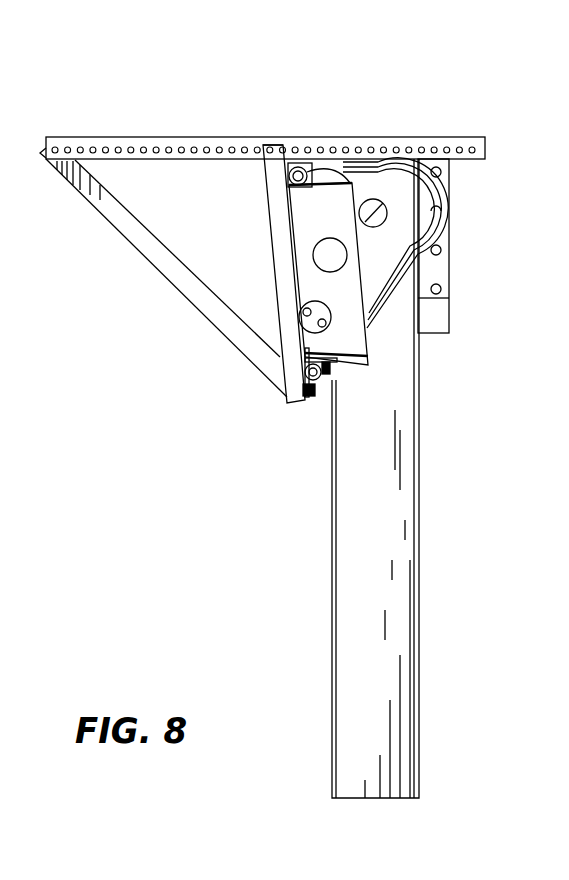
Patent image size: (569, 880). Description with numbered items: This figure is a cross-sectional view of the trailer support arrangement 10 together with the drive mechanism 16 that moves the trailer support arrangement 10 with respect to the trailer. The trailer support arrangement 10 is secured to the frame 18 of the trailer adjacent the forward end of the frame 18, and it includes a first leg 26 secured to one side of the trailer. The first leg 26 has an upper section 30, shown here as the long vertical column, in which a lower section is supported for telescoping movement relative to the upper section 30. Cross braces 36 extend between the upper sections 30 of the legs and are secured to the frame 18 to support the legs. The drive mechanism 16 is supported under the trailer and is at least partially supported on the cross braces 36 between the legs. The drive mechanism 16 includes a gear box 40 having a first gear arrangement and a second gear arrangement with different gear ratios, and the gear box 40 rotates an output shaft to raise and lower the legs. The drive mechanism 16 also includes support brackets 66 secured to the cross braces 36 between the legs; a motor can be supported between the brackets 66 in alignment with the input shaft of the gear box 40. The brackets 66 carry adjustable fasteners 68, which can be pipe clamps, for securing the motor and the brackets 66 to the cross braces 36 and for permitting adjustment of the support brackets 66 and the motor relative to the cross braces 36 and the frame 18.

The trailer support arrangement 10 is at (424, 70).
The frame 18 is at (163, 143).
The cross braces 36 is at (309, 167).
The adjustable fasteners 68 is at (352, 160).
The gear box 40 is at (430, 197).
The drive mechanism 16 is at (456, 308).
The support brackets 66 is at (358, 343).
The first leg 26 is at (439, 478).
The upper section 30 is at (370, 648).